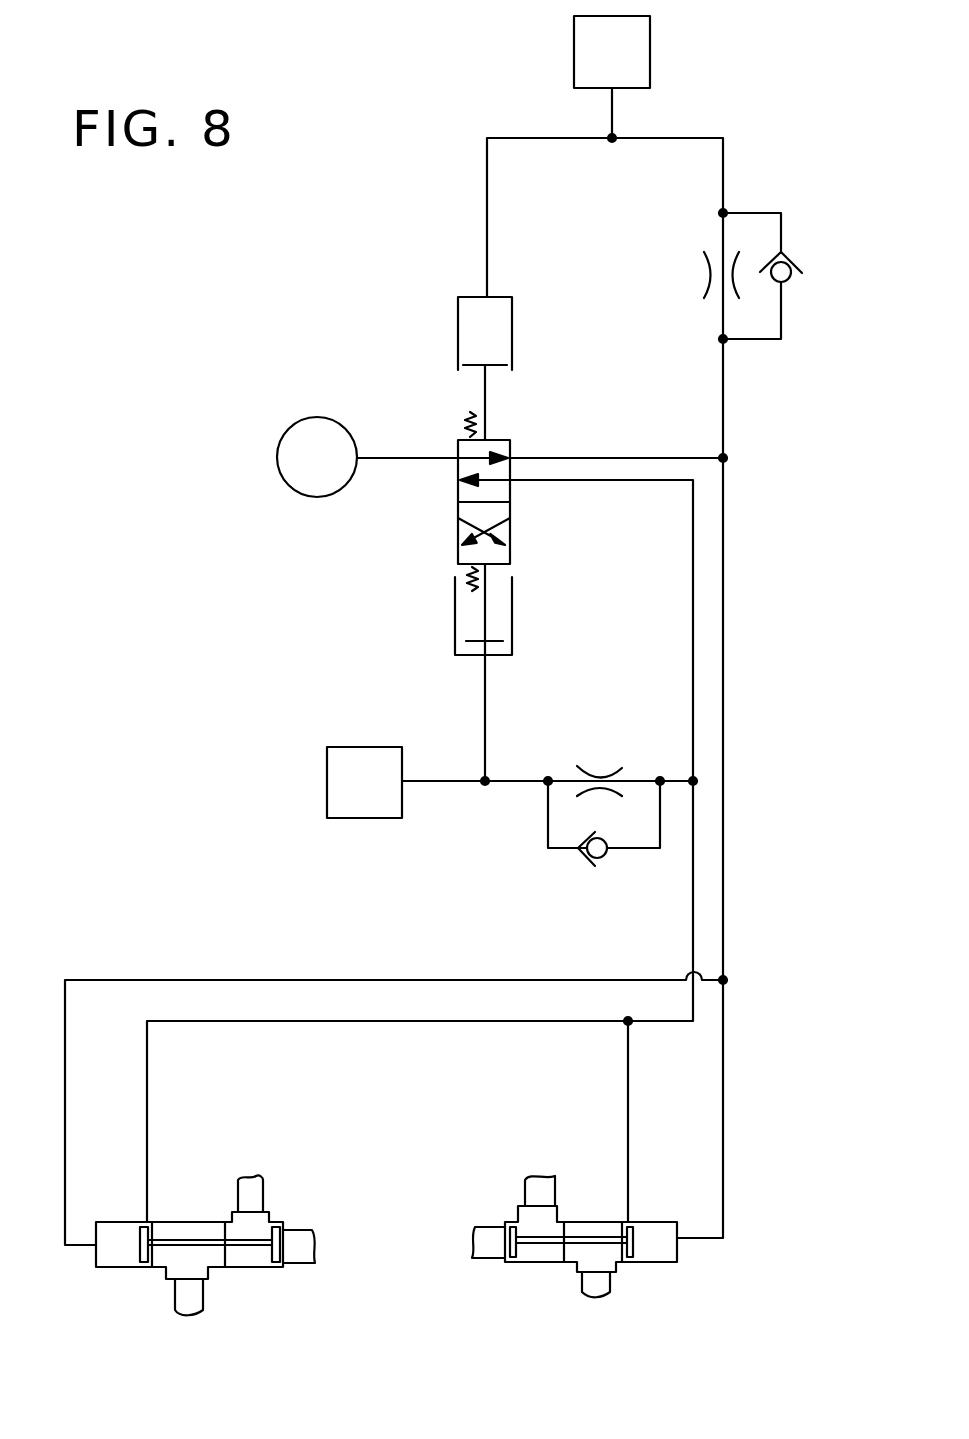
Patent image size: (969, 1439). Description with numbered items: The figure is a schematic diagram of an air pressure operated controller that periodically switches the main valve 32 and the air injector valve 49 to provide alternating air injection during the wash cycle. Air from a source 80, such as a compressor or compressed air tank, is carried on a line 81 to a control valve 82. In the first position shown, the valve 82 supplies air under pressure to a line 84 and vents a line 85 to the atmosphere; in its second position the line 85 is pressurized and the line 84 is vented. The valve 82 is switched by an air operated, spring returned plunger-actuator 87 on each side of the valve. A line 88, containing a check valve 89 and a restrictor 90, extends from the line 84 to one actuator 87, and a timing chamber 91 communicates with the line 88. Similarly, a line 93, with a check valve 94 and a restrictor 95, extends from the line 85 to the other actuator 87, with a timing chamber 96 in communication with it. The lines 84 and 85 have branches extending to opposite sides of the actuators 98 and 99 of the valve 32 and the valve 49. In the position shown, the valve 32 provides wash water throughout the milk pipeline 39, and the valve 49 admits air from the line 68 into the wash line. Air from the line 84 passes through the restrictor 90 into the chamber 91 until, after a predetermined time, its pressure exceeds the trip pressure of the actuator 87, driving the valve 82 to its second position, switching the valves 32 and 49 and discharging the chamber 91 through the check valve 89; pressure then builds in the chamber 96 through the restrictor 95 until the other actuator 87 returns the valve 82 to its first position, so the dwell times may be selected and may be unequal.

The timing chamber 91 is at (651, 45).
The line 88 is at (553, 140).
The check valve 89 is at (800, 262).
The restrictor 90 is at (707, 286).
The plunger-actuator 87 is at (458, 342).
The control valve 82 is at (458, 532).
The air source 80 is at (280, 475).
The line 81 is at (383, 460).
The line 84 is at (558, 458).
The line 85 is at (568, 482).
The line 93 is at (485, 738).
The timing chamber 96 is at (375, 820).
The restrictor 95 is at (577, 767).
The check valve 94 is at (590, 868).
The actuator 99 is at (194, 1243).
The actuator 98 is at (574, 1239).
The valve 49 is at (180, 1222).
The line 68 is at (205, 1298).
The main valve 32 is at (592, 1222).
The milk pipeline 39 is at (522, 1195).